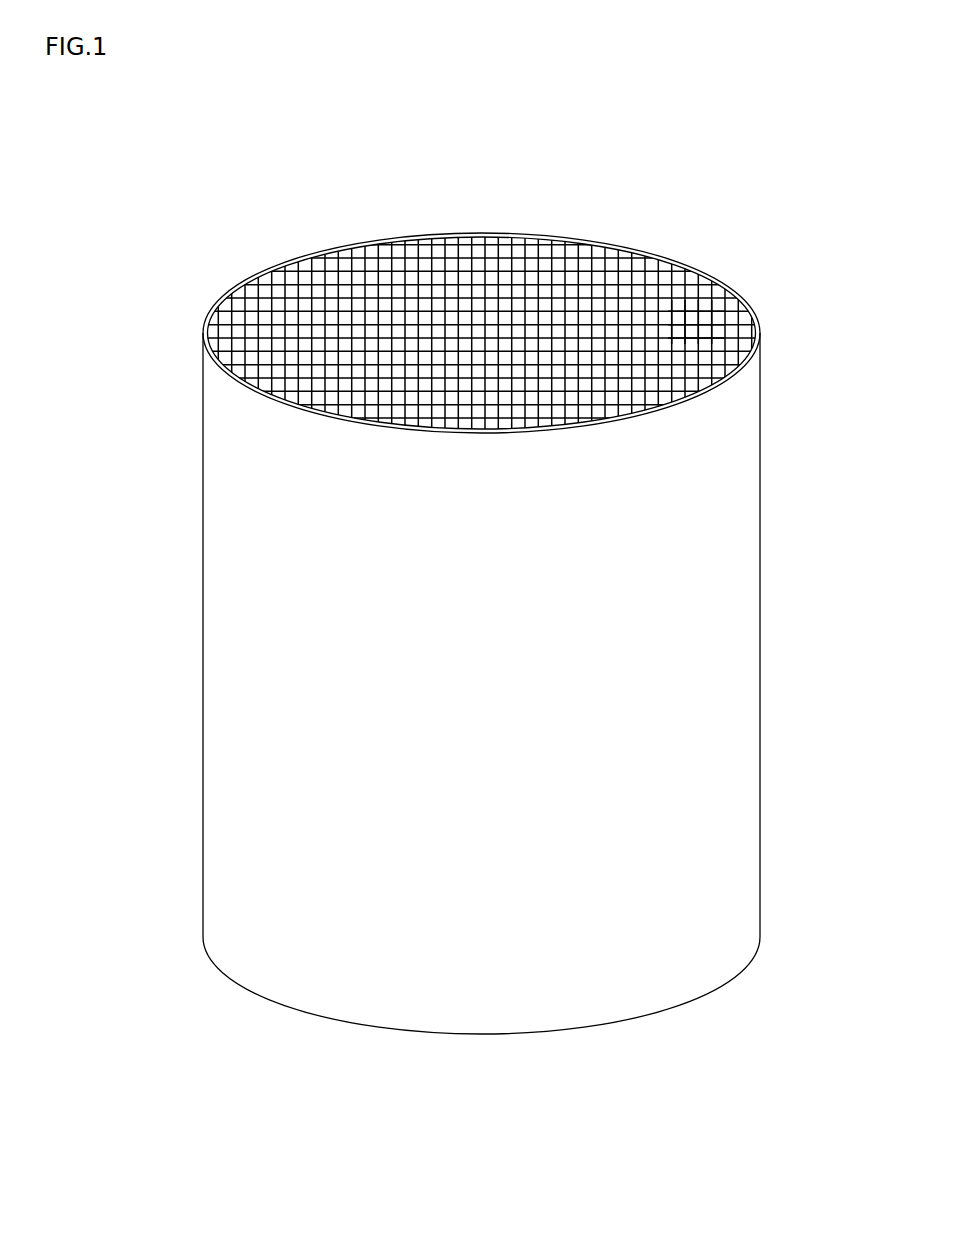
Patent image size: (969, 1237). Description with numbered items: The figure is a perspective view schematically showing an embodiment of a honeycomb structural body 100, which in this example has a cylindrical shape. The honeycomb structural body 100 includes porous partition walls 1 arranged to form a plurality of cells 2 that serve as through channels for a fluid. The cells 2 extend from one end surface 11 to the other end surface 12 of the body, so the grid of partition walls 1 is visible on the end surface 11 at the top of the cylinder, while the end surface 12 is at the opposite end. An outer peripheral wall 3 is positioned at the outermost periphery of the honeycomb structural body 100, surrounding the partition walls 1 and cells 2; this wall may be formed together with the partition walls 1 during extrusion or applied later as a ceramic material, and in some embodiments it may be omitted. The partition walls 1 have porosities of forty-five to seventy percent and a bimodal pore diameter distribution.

The honeycomb structural body 100 is at (824, 132).
The partition wall 1 is at (557, 268).
The cell 2 is at (688, 322).
The outer peripheral wall 3 is at (720, 532).
The one end surface 11 is at (228, 271).
The the other end surface 12 is at (232, 990).